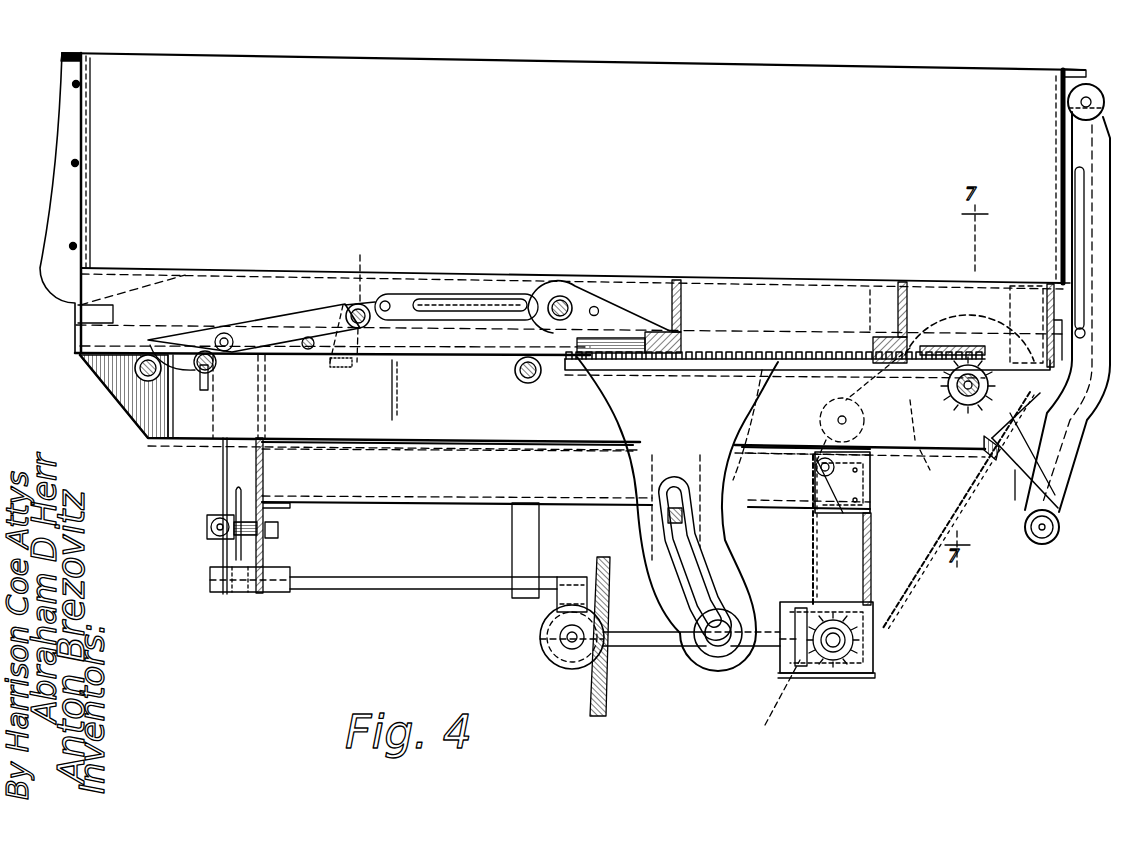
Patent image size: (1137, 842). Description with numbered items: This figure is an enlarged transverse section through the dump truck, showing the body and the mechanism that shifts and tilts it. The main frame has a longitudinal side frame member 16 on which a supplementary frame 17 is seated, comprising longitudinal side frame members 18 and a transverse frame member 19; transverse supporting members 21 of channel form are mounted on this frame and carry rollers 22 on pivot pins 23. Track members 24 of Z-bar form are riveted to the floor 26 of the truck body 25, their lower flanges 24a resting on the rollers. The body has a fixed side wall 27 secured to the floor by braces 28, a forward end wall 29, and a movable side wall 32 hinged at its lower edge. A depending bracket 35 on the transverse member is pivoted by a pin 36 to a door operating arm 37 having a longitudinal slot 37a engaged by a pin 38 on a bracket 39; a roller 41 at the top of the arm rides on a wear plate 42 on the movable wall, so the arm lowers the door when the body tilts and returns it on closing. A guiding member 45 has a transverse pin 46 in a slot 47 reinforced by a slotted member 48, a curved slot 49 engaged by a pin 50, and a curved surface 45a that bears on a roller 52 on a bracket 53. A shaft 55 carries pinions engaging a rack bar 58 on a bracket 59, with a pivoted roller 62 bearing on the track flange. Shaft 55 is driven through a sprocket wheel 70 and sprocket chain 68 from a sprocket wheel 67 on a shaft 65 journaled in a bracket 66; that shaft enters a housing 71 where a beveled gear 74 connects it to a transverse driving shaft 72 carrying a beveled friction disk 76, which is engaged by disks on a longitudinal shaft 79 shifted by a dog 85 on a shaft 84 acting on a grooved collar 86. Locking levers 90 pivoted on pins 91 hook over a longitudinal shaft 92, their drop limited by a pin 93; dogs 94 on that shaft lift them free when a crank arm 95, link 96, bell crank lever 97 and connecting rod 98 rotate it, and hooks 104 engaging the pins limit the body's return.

The longitudinal side frame member 16 is at (283, 541).
The supplementary frame 17 is at (296, 507).
The longitudinal side frame member of supplementary frame 18 is at (254, 463).
The transverse frame member 19 is at (452, 488).
The transverse supporting member 21 is at (143, 424).
The roller 22 is at (140, 386).
The pivot pin 23 is at (515, 373).
The track member 24 is at (388, 278).
The lower flange of track member 24a is at (448, 357).
The truck body 25 is at (136, 371).
The floor 26 is at (200, 266).
The side wall 27 is at (88, 146).
The brace 28 is at (58, 300).
The forward end wall 29 is at (573, 193).
The movable side wall 32 is at (1060, 149).
The depending bracket 35 is at (1015, 470).
The pin 36 is at (1059, 535).
The door operating arm 37 is at (1078, 432).
The longitudinal slot 37a is at (1082, 223).
The pin 38 is at (1086, 333).
The bracket 39 is at (1060, 343).
The roller 41 is at (1095, 91).
The wear plate 42 is at (1060, 85).
The guiding member 45 is at (624, 470).
The curved surface 45a is at (738, 421).
The transverse pin 46 is at (565, 298).
The slot 47 is at (462, 301).
The slotted member 48 is at (432, 293).
The curved slot 49 is at (660, 541).
The pin 50 is at (690, 521).
The roller 52 is at (815, 471).
The bracket 53 is at (850, 489).
The shaft 55 is at (966, 406).
The rack bar 58 is at (657, 370).
The bracket 59 is at (684, 302).
The pivoted roller 62 is at (945, 323).
The shaft 65 is at (860, 669).
The bracket 66 is at (858, 631).
The sprocket wheel 67 is at (818, 677).
The sprocket chain 68 is at (918, 589).
The sprocket wheel 70 is at (905, 448).
The housing 71 is at (790, 669).
The transverse driving shaft 72 is at (665, 649).
The beveled gear 74 is at (769, 706).
The beveled friction disk 76 is at (608, 695).
The longitudinal shaft 79 is at (565, 643).
The shaft 84 is at (463, 577).
The dog 85 is at (560, 601).
The grooved collar 86 is at (542, 641).
The locking lever 90 is at (270, 327).
The pin 91 is at (358, 332).
The longitudinal shaft 92 is at (216, 367).
The pin 93 is at (309, 350).
The dog 94 is at (203, 383).
The crank arm 95 is at (218, 334).
The link 96 is at (221, 453).
The bell crank lever 97 is at (207, 531).
The connecting rod 98 is at (235, 498).
The hook 104 is at (354, 298).